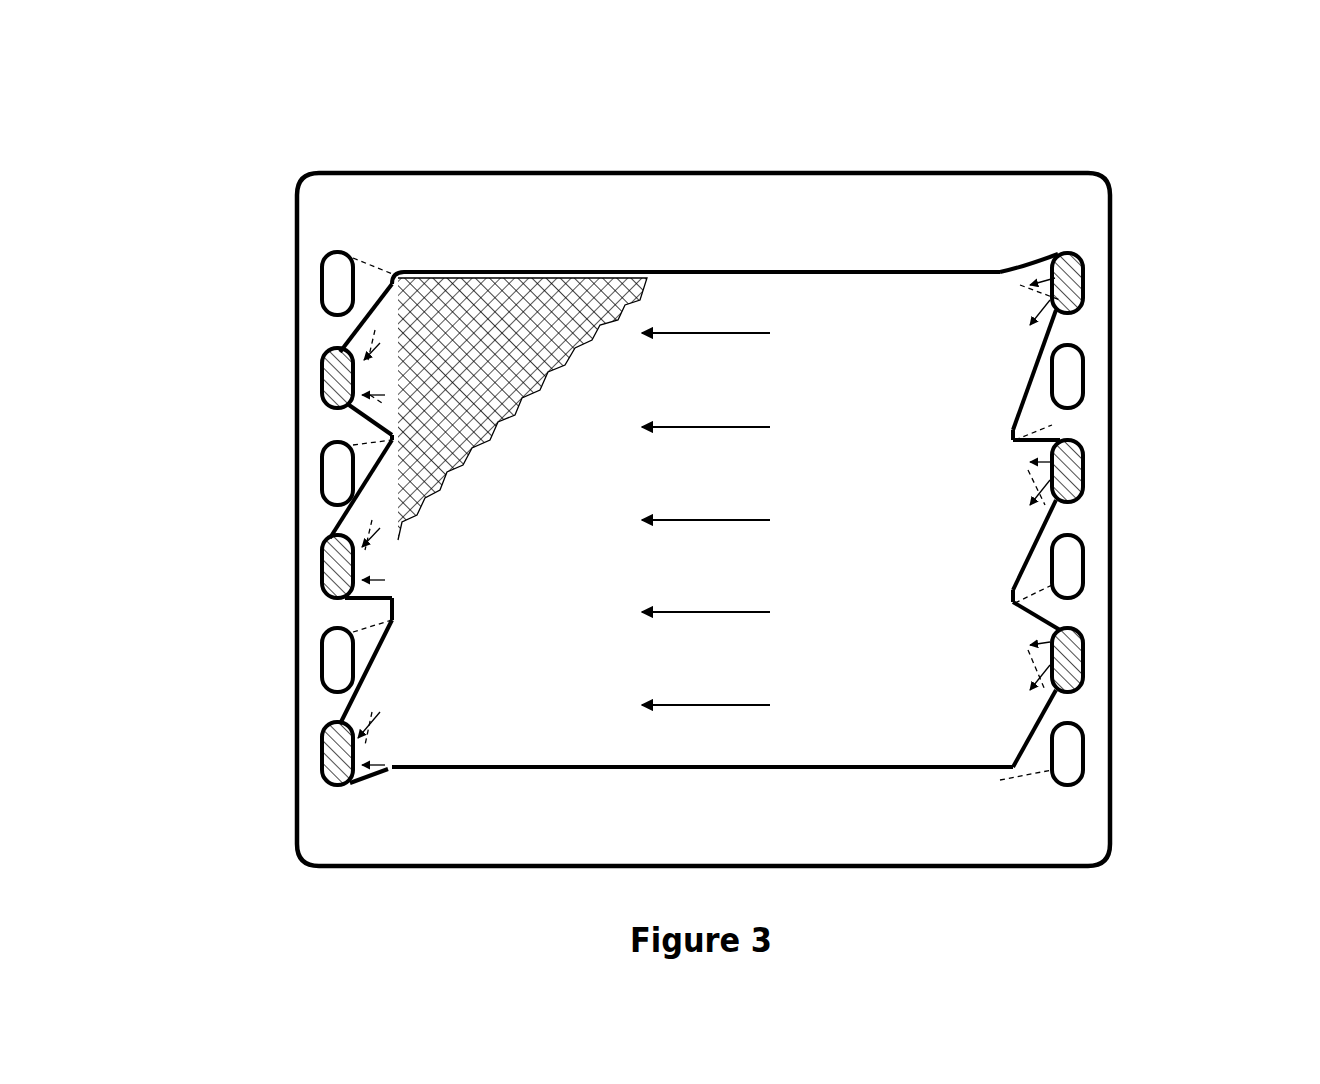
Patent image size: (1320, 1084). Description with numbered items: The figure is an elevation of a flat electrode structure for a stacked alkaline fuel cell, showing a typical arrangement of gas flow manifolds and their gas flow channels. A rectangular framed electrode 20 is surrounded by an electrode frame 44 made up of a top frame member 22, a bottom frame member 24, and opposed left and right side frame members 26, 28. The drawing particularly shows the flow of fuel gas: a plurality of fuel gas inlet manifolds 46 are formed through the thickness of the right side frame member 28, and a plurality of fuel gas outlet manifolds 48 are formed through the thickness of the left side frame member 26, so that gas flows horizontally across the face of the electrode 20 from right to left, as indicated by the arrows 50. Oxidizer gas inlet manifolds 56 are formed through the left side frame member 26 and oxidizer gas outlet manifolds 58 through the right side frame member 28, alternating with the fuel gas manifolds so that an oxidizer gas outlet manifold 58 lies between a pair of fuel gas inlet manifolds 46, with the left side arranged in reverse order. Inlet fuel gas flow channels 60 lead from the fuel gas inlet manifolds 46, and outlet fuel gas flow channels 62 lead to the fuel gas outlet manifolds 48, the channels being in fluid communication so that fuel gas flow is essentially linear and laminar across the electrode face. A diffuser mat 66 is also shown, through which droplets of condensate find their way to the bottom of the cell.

The framed electrode 20 is at (702, 519).
The top frame member 22 is at (845, 215).
The bottom frame member 24 is at (855, 822).
The left side frame member 26 is at (322, 705).
The right side frame member 28 is at (1092, 330).
The electrode frame 44 is at (703, 493).
The fuel gas inlet manifold 46 is at (1068, 283).
The fuel gas outlet manifold 48 is at (340, 382).
The arrows 50 is at (722, 705).
The oxidizer gas inlet manifold 56 is at (338, 285).
The oxidizer gas outlet manifold 58 is at (1068, 378).
The inlet fuel gas flow channel 60 is at (1035, 273).
The outlet fuel gas flow channel 62 is at (375, 330).
The diffuser mat 66 is at (495, 352).